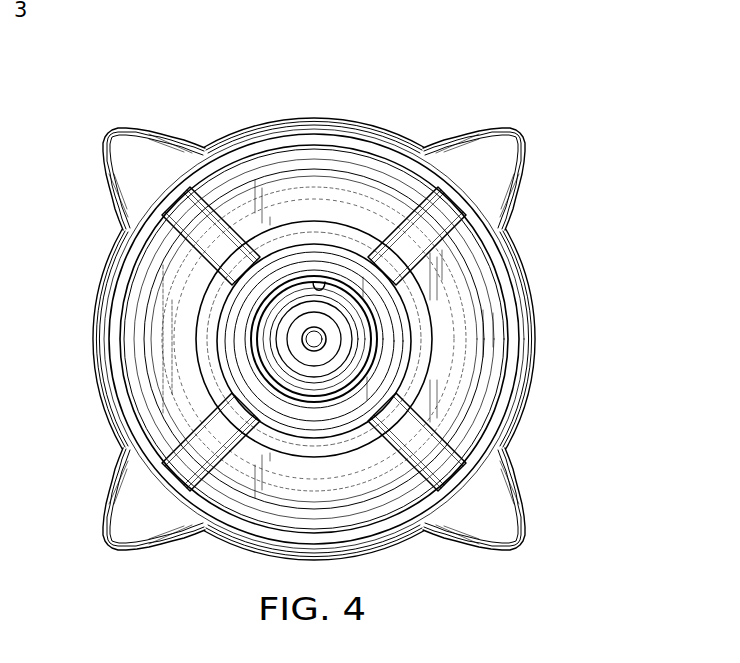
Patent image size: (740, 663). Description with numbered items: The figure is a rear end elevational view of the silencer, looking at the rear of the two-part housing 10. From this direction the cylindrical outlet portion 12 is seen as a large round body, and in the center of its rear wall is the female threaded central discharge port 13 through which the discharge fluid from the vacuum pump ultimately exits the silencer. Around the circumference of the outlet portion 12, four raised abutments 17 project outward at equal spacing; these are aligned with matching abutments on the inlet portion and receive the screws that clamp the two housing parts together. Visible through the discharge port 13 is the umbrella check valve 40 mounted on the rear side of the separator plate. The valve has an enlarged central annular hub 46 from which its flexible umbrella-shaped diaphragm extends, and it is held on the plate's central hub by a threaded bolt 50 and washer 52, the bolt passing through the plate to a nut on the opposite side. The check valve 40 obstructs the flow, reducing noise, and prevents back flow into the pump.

The housing 10 is at (320, 97).
The cylindrical outlet portion 12 is at (173, 327).
The central discharge port 13 is at (325, 283).
The raised abutments 17 is at (125, 150).
The umbrella check valve 40 is at (264, 348).
The central annular hub 46 is at (419, 297).
The threaded bolt 50 is at (452, 318).
The washer 52 is at (438, 360).